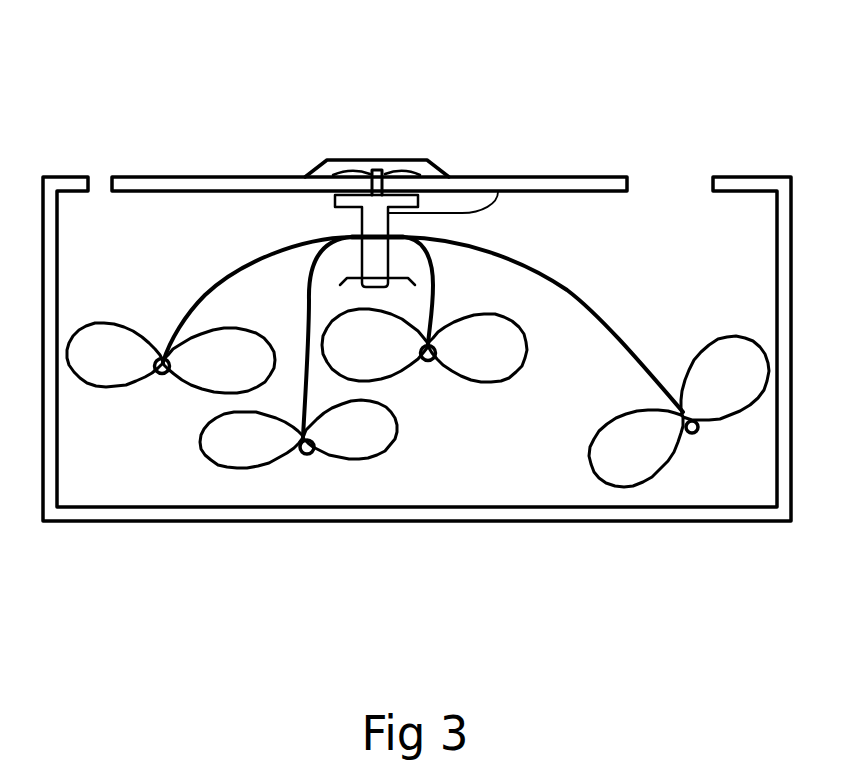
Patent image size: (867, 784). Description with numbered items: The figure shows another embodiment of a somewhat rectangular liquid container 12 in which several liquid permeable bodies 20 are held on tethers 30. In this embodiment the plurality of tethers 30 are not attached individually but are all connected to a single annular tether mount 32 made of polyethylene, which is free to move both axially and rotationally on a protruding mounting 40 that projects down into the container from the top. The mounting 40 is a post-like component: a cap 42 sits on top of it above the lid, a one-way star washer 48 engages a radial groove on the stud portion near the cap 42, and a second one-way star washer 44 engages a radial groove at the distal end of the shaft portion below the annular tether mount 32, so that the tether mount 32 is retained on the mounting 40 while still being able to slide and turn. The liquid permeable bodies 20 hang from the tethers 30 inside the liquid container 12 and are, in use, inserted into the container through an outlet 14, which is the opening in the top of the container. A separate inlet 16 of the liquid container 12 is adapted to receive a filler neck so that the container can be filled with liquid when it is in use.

The liquid container 12 is at (82, 515).
The outlet 14 is at (665, 186).
The inlet 16 is at (99, 184).
The liquid permeable bodies 20 is at (370, 430).
The tethers 30 is at (600, 327).
The annular tether mount 32 is at (362, 236).
The mounting 40 is at (497, 192).
The cap 42 is at (425, 158).
The star washer 44 is at (410, 278).
The star washer 48 is at (340, 170).